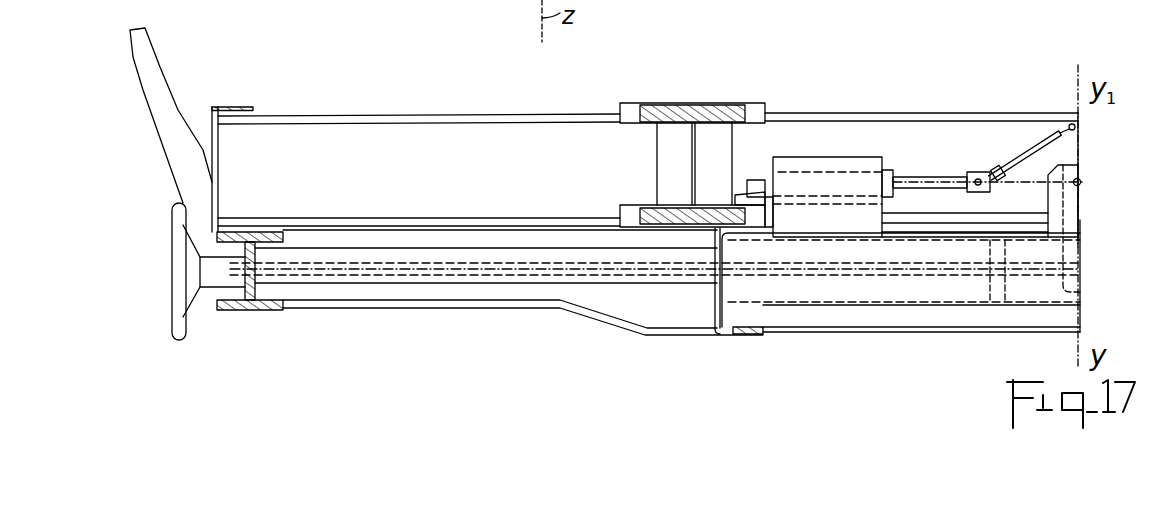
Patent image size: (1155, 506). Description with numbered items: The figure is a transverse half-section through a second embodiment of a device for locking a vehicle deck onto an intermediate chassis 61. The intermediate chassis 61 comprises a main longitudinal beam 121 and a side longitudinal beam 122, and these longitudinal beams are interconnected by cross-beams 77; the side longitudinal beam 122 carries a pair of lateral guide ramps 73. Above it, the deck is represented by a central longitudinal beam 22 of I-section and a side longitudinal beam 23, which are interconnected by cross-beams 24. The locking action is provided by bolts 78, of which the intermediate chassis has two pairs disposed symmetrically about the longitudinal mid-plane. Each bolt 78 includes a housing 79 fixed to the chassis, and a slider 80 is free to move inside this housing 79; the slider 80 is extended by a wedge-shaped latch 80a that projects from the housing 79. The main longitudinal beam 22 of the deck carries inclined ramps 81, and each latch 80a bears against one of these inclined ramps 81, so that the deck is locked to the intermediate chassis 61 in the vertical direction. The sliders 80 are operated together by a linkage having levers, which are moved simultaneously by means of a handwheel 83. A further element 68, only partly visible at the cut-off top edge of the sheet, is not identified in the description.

The lateral guide ramps 73 is at (148, 62).
The handwheel 83 is at (180, 313).
The cross-beams 24 is at (371, 117).
The side longitudinal beam 23 is at (238, 106).
The central longitudinal beam 22 is at (693, 104).
The inclined ramps 81 is at (745, 202).
The wedge-shaped latch 80a is at (753, 183).
The housing 79 is at (815, 165).
The bolts 78 is at (882, 157).
The slider 80 is at (892, 177).
The cross-beams 77 is at (482, 303).
The side longitudinal beam 122 is at (260, 311).
The main longitudinal beam 121 is at (737, 335).
The intermediate chassis 61 is at (928, 336).
The element 68 (cut off) 68 is at (498, 7).